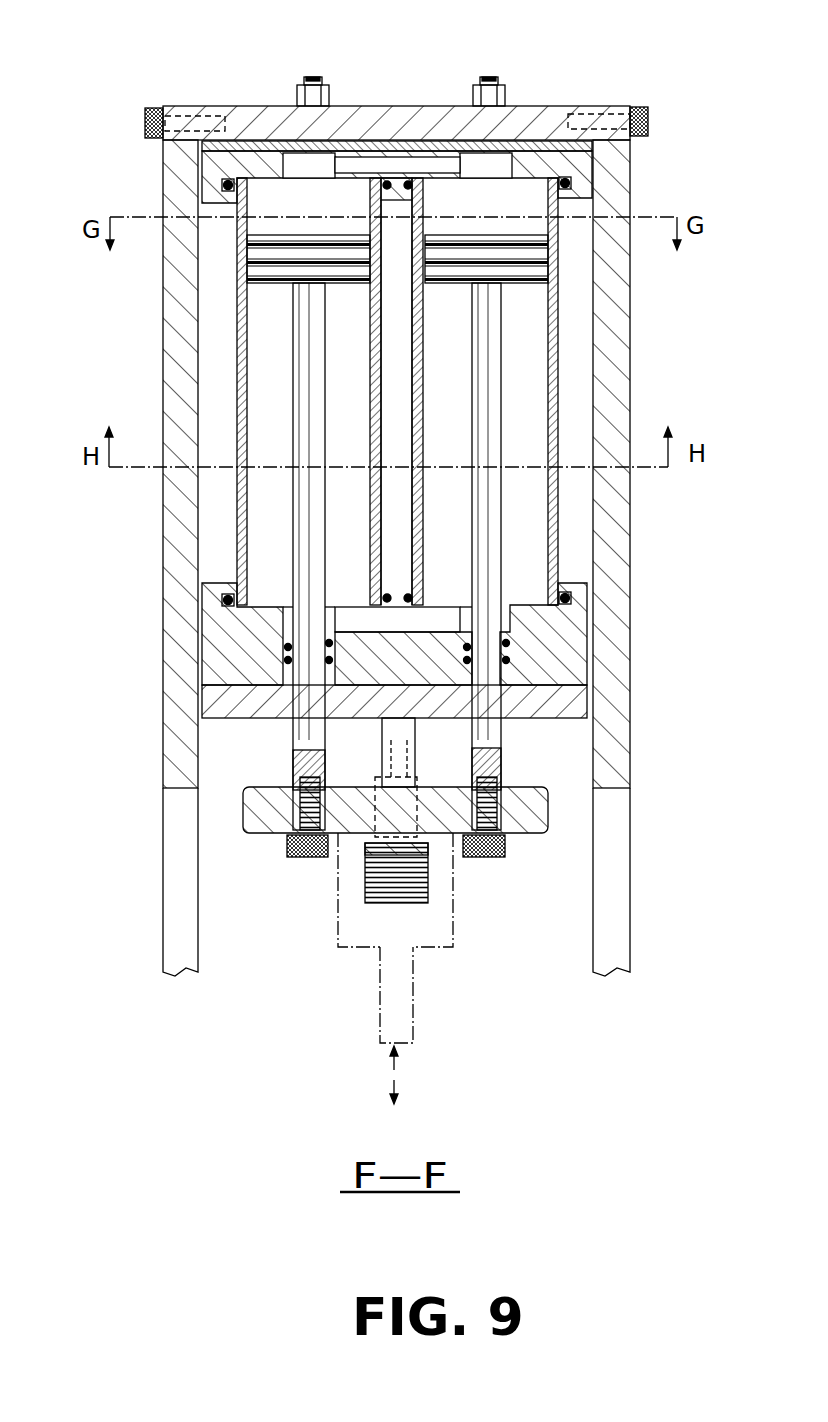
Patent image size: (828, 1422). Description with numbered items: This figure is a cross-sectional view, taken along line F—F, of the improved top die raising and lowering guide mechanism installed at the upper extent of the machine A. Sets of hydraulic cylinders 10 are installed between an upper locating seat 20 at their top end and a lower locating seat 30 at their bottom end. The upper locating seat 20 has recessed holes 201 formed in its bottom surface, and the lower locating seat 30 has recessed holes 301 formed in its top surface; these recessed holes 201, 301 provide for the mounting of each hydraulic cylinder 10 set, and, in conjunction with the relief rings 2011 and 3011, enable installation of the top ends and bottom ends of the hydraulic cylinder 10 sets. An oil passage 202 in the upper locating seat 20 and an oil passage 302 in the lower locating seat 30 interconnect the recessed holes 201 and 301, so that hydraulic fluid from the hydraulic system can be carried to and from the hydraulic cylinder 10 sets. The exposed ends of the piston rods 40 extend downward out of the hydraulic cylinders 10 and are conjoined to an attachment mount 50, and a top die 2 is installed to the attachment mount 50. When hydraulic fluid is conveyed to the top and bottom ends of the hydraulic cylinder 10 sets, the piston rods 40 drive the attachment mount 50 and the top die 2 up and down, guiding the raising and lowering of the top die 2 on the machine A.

The machine A is at (290, 128).
The top die 2 is at (363, 927).
The hydraulic cylinder 10 is at (410, 333).
The upper locating seat 20 is at (553, 128).
The recessed hole 201 is at (225, 182).
The relief ring 2011 is at (226, 185).
The oil passage 202 is at (383, 165).
The lower locating seat 30 is at (565, 650).
The recessed hole 301 is at (233, 598).
The relief ring 3011 is at (228, 601).
The oil passage 302 is at (405, 620).
The piston rod 40 is at (488, 622).
The attachment mount 50 is at (277, 807).